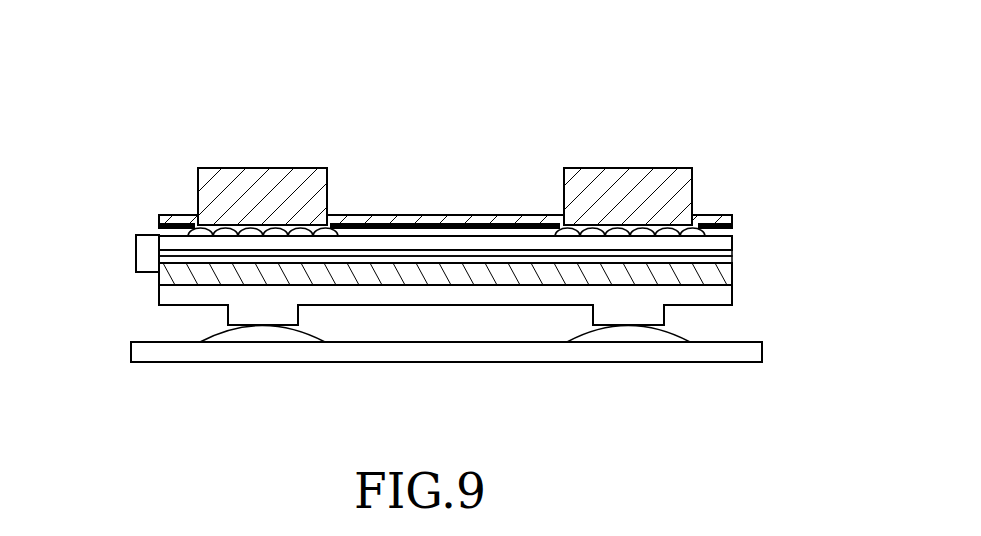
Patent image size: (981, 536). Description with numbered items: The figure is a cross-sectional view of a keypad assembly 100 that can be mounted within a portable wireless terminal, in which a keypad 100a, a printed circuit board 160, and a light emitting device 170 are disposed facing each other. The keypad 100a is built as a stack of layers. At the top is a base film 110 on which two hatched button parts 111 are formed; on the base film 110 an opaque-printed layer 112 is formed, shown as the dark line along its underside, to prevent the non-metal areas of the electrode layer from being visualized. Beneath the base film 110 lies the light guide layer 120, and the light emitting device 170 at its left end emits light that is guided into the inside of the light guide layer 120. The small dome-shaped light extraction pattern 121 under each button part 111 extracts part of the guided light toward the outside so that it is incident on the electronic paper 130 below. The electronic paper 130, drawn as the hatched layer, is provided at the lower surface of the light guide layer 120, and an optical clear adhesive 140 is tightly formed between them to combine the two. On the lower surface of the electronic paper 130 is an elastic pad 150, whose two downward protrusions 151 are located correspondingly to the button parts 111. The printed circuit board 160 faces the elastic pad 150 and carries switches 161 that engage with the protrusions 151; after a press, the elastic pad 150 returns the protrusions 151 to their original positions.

The keypad assembly 100 is at (455, 54).
The keypad 100a is at (757, 191).
The base film 110 is at (433, 220).
The button parts 111 is at (263, 198).
The opaque-printed layer 112 is at (500, 225).
The light guide layer 120 is at (727, 243).
The light extraction pattern 121 is at (692, 227).
The electronic paper 130 is at (167, 277).
The optical clear adhesive 140 is at (727, 258).
The elastic pad 150 is at (167, 295).
The protrusions 151 is at (258, 312).
The printed circuit board 160 is at (444, 350).
The switches 161 is at (292, 333).
The light emitting device 170 is at (142, 252).